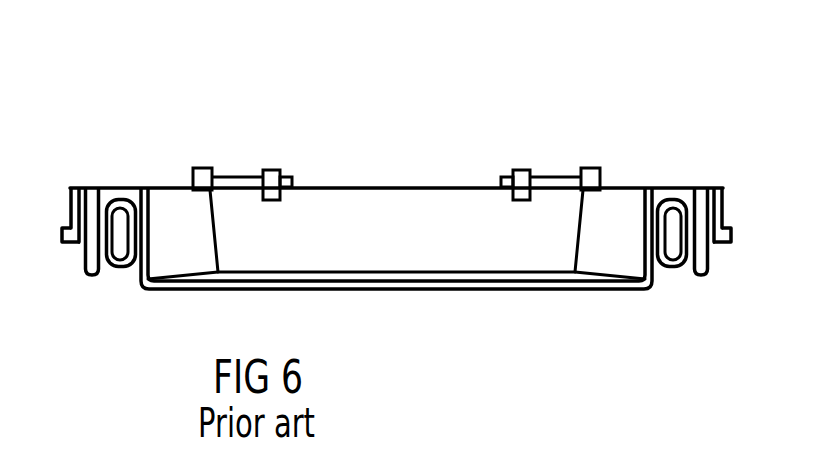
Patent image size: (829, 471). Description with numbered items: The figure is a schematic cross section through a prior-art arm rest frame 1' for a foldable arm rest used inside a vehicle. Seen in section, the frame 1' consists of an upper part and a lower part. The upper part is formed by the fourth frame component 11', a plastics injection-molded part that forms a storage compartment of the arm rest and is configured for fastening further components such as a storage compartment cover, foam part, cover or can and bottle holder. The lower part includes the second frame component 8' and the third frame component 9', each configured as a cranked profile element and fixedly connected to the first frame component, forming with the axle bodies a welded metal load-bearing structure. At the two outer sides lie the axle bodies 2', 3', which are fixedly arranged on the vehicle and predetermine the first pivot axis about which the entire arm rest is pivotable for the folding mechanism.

The arm rest frame 1' is at (396, 147).
The axle body 2' is at (741, 188).
The axle body 3' is at (57, 189).
The second frame component 8' is at (678, 283).
The third frame component 9' is at (121, 283).
The fourth frame component 11' is at (396, 198).